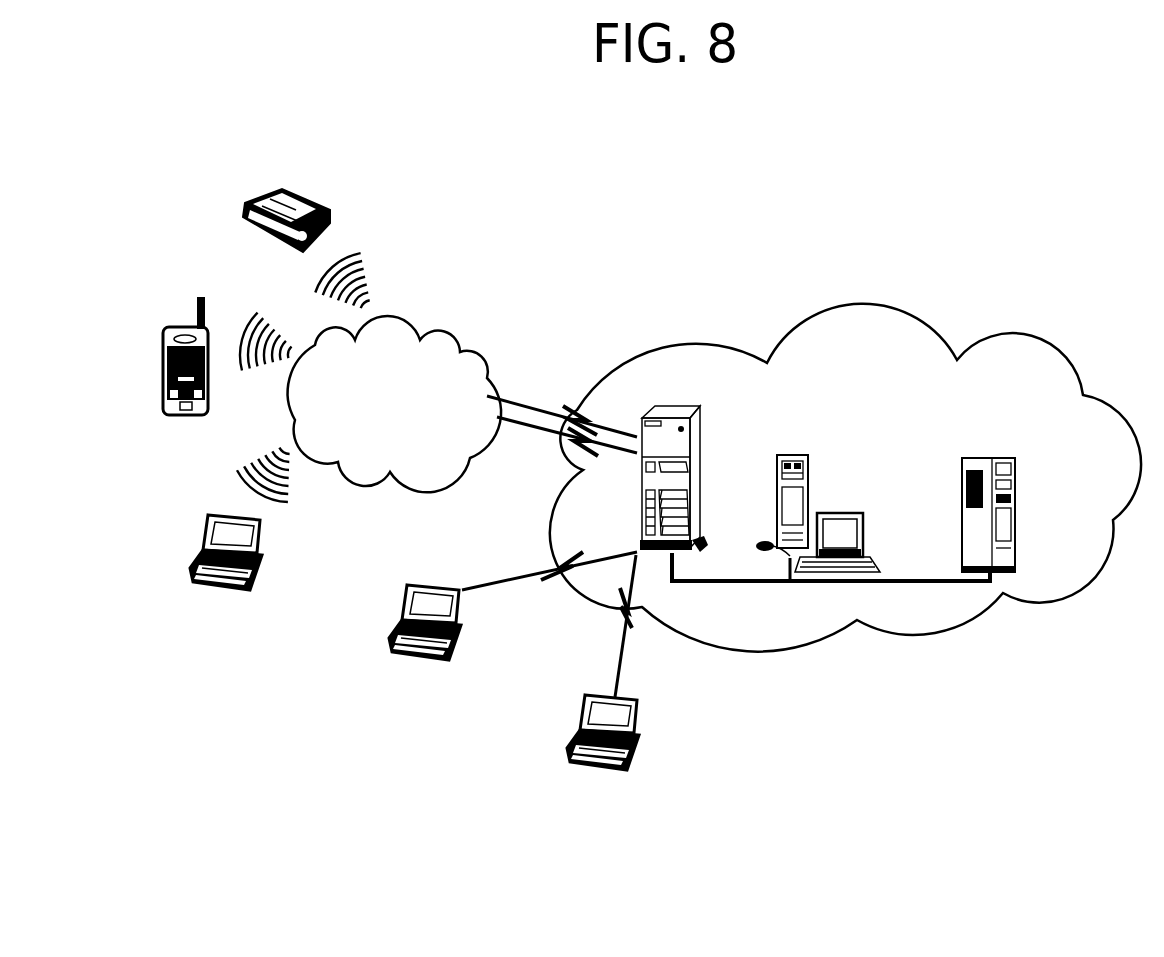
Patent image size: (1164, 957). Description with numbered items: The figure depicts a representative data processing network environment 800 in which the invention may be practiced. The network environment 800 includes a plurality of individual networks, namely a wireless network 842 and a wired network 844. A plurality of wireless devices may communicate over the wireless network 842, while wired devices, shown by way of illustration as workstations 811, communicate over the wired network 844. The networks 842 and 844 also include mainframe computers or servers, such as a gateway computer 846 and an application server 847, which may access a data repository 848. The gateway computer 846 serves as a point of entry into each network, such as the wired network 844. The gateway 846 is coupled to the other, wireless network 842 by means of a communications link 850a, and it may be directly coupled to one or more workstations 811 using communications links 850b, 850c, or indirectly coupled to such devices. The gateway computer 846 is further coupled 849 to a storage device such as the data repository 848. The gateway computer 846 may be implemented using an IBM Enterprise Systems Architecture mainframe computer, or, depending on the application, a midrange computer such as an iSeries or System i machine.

The data processing network environment 800 is at (694, 136).
The workstations 811 is at (402, 491).
The wireless network 842 is at (394, 395).
The wired network 844 is at (845, 462).
The gateway computer 846 is at (707, 460).
The application server 847 is at (818, 495).
The data repository 848 is at (1016, 515).
The coupling 849 is at (831, 585).
The communications link 850a is at (561, 391).
The communications link 850b is at (549, 601).
The communications link 850c is at (652, 626).